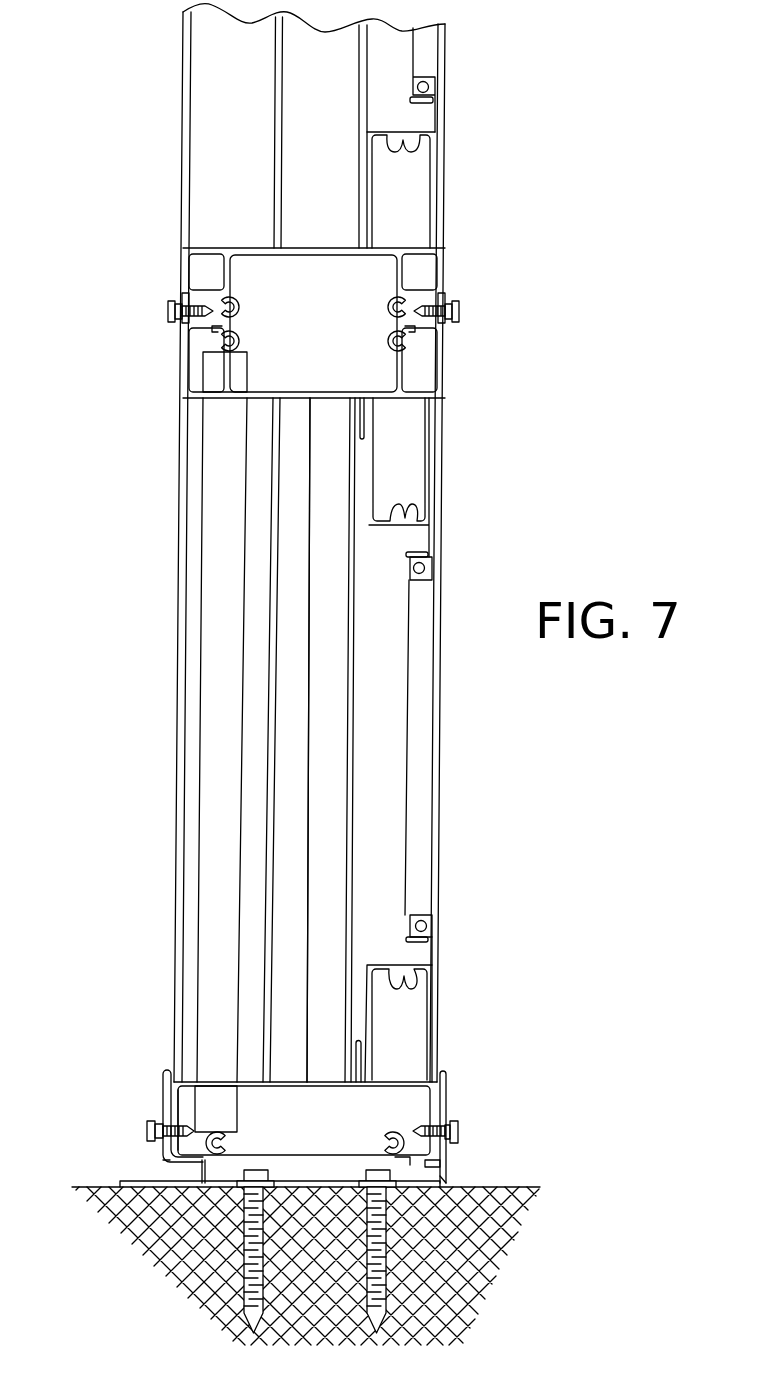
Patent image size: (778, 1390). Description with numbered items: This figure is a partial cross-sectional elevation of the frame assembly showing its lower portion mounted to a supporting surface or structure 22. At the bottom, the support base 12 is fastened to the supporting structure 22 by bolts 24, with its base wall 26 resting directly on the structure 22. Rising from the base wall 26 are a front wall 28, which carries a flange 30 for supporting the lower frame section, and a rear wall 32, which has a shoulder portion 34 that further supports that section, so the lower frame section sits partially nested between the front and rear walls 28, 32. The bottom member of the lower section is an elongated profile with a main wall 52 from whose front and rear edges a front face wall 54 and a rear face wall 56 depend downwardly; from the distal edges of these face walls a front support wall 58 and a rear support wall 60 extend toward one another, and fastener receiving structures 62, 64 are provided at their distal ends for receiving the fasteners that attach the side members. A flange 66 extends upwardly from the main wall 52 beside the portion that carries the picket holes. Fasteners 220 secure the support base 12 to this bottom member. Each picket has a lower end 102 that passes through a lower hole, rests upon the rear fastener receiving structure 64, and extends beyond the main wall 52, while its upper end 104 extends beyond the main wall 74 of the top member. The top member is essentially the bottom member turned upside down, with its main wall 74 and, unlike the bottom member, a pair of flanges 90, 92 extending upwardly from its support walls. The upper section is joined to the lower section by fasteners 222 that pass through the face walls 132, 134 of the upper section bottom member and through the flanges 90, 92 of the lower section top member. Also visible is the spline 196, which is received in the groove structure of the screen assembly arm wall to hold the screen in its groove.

The support base 12 is at (314, 1165).
The supporting surface or structure 22 is at (527, 1190).
The bolts 24 is at (263, 1178).
The base wall 26 is at (162, 1168).
The front wall 28 is at (447, 1072).
The flange 30 is at (447, 1185).
The rear wall 32 is at (162, 1078).
The shoulder portion 34 is at (160, 1155).
The main wall 52 is at (317, 1092).
The front face wall 54 is at (430, 1115).
The rear face wall 56 is at (198, 1103).
The front support wall 58 is at (407, 1160).
The rear support wall 60 is at (218, 1163).
The fastener receiving structure 62 is at (384, 1133).
The fastener receiving structure 64 is at (232, 1140).
The flange 66 is at (346, 1063).
The main wall 74 is at (343, 392).
The flange 90 is at (424, 292).
The flange 92 is at (182, 290).
The lower end 102 is at (182, 1105).
The upper end 104 is at (238, 367).
The face wall 132 is at (440, 294).
The face wall 134 is at (181, 294).
The spline 196 is at (422, 566).
The fasteners 220 is at (148, 1122).
The fasteners 222 is at (168, 316).